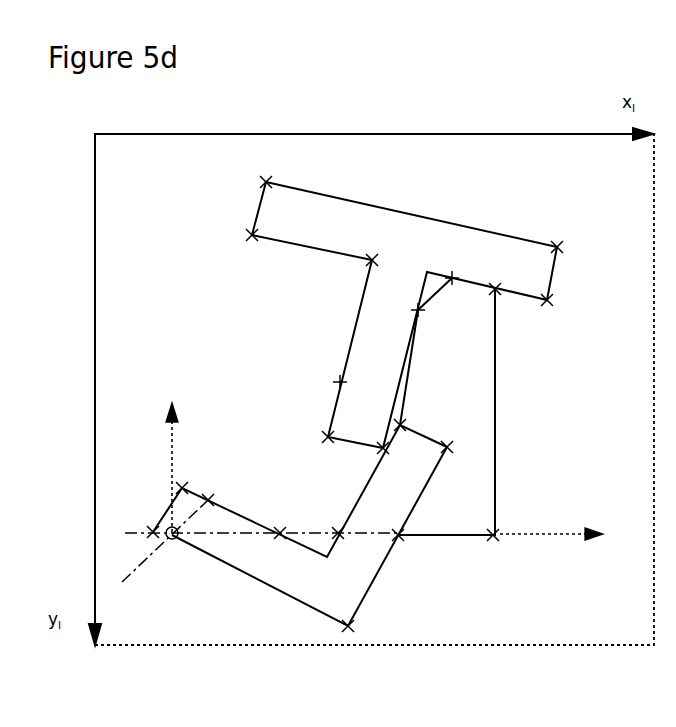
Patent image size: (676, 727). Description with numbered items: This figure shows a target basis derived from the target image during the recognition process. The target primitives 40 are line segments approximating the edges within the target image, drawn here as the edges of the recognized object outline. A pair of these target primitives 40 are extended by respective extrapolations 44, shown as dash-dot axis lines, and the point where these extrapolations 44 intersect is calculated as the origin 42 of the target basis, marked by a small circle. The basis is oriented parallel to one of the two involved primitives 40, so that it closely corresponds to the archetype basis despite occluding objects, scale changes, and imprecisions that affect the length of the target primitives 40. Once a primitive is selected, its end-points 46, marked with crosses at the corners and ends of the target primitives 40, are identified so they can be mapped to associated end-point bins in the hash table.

The target primitives 40 is at (262, 204).
The origin 42 is at (175, 540).
The extrapolations 44 is at (177, 521).
The end-points 46 is at (367, 264).